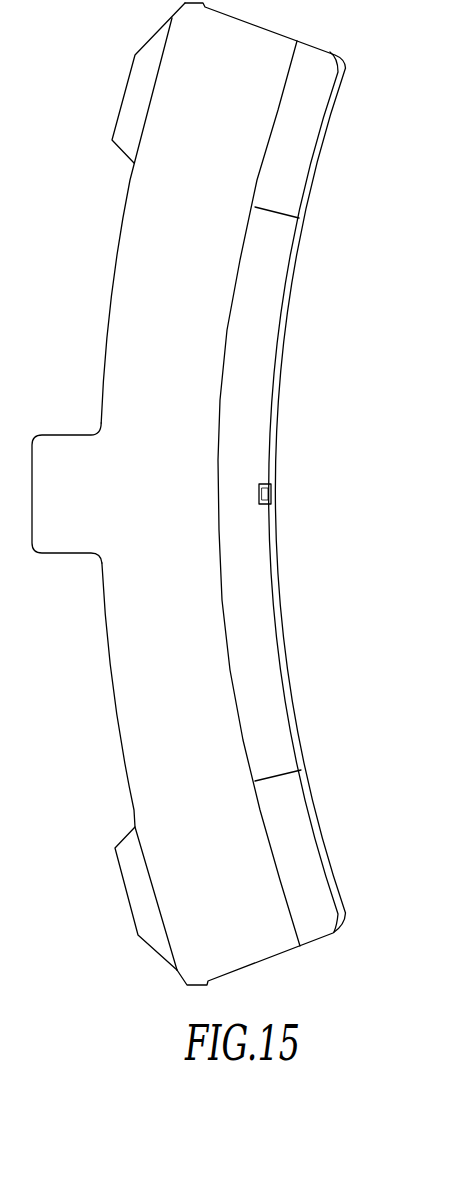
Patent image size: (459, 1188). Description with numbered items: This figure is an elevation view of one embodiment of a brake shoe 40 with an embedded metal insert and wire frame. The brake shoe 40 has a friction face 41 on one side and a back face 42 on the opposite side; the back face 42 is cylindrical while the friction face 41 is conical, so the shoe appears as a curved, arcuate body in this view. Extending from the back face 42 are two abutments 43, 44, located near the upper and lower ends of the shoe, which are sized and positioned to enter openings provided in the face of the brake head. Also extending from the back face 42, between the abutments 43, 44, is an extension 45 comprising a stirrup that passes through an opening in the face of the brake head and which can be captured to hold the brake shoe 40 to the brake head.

The brake shoe 40 is at (304, 303).
The friction face 41 is at (276, 417).
The back face 42 is at (114, 270).
The abutment 43 is at (124, 95).
The abutment 44 is at (123, 880).
The extension 45 is at (63, 450).